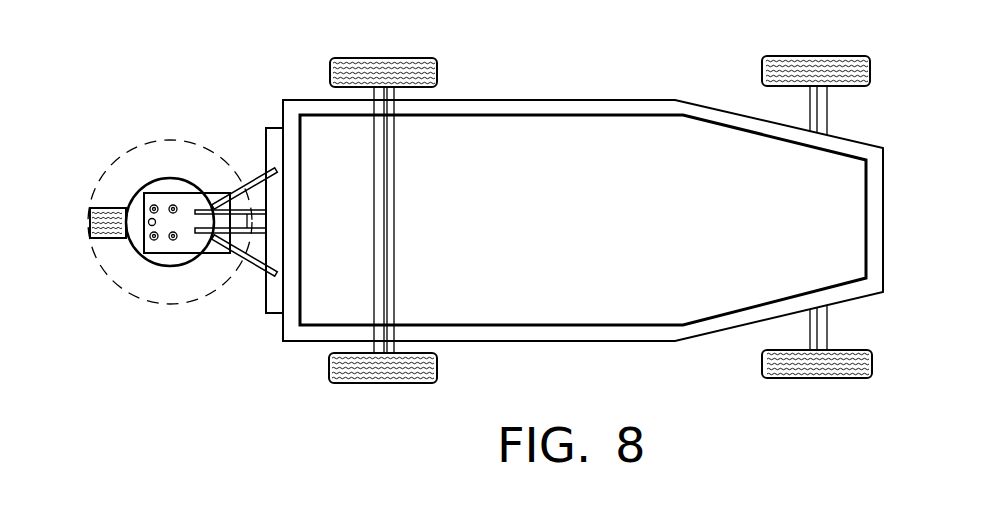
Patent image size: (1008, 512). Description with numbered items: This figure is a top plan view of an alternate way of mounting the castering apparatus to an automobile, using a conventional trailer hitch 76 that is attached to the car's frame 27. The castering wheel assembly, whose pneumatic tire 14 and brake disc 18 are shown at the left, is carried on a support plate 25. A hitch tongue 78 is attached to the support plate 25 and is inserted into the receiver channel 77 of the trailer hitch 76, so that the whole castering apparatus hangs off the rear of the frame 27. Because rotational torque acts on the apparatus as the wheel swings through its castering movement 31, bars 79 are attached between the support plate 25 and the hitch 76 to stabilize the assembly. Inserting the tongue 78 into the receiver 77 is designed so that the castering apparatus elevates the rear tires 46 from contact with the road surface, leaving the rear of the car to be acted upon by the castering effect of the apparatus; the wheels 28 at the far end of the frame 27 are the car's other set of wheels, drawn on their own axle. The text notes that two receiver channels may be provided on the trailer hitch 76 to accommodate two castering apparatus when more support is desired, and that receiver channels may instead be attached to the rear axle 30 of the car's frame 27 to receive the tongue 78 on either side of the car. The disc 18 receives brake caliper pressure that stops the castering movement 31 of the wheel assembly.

The pneumatic tire 14 is at (107, 208).
The disc 18 is at (167, 192).
The support plate 25 is at (167, 250).
The frame 27 is at (501, 100).
The rear wheel 28 is at (802, 55).
The rear axle 30 is at (394, 212).
The castering movement 31 is at (97, 260).
The rear tires 46 is at (383, 58).
The trailer hitch 76 is at (272, 128).
The receiver channel 77 is at (247, 220).
The hitch tongue 78 is at (247, 212).
The bars 79 is at (248, 188).